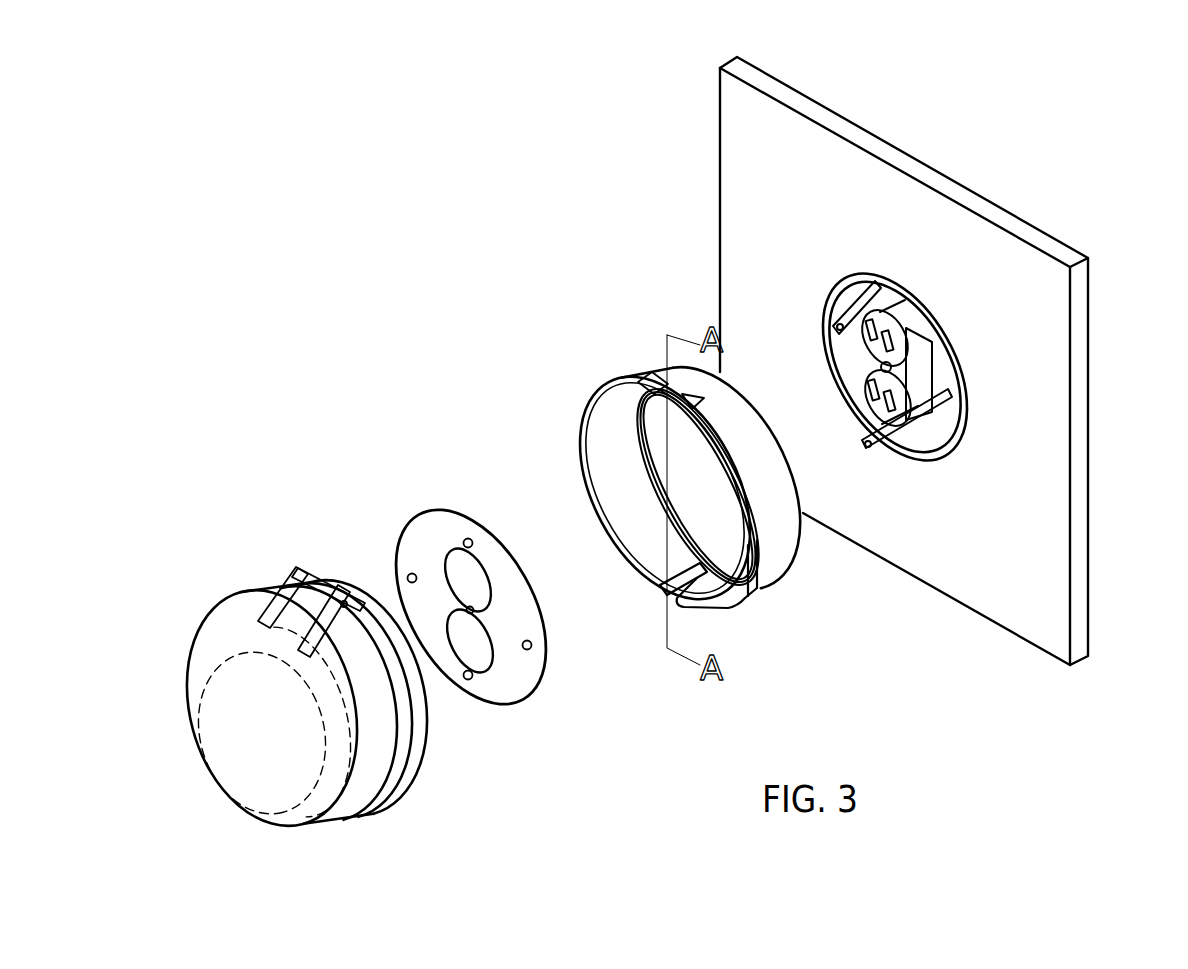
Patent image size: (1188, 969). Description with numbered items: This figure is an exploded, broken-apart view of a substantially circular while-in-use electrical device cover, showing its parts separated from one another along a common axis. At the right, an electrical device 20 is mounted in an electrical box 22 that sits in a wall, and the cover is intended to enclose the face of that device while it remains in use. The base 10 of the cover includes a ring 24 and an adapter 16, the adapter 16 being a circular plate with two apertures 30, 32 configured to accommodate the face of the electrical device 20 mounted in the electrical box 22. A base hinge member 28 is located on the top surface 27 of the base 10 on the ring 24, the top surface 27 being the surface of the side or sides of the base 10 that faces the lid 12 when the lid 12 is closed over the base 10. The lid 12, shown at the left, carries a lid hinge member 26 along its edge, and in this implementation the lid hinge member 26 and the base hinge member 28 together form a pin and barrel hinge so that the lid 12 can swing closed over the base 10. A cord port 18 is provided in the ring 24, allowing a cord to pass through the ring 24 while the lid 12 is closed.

The base 10 is at (537, 493).
The lid 12 is at (265, 582).
The adapter 16 is at (495, 636).
The cord port 18 is at (670, 593).
The electrical device 20 is at (907, 457).
The electrical box 22 is at (948, 432).
The ring 24 is at (592, 408).
The lid hinge member 26 is at (310, 575).
The top surface 27 is at (750, 540).
The base hinge member 28 is at (652, 383).
The aperture 30 is at (470, 578).
The aperture 32 is at (470, 643).